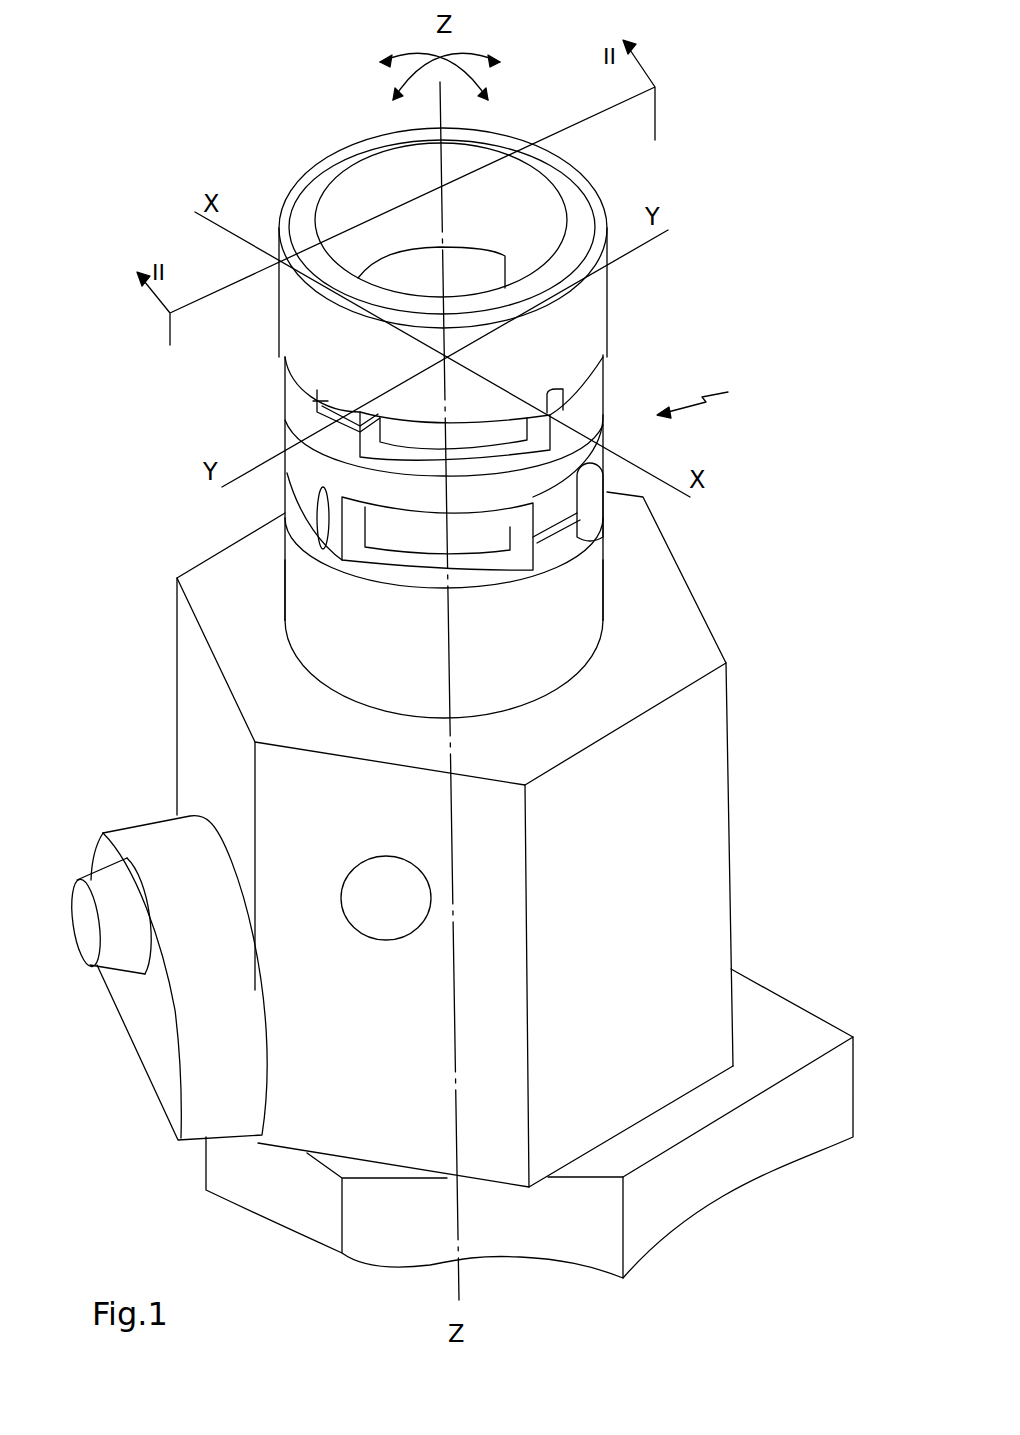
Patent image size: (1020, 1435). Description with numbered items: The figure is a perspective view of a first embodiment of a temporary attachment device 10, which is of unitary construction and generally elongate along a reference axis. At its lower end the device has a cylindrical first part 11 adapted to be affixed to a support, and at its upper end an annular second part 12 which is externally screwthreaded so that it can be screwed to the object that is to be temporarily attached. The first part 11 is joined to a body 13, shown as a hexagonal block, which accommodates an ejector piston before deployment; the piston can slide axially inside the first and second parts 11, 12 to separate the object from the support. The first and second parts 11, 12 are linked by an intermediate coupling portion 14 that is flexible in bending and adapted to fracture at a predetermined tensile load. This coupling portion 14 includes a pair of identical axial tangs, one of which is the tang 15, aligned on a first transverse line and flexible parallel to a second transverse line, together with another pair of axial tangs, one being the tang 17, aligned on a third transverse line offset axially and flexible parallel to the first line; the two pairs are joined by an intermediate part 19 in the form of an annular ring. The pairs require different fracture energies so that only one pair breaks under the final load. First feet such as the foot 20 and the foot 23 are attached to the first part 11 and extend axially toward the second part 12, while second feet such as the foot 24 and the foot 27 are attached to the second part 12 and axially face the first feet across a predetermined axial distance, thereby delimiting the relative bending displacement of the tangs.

The temporary attachment device 10 is at (778, 298).
The cylindrical first part 11 is at (612, 607).
The annular second part 12 is at (612, 292).
The body 13 is at (742, 835).
The intermediate coupling portion 14 is at (710, 395).
The axial tang 15 is at (565, 412).
The axial tang 17 is at (335, 527).
The intermediate part 19 is at (285, 422).
The first foot 20 is at (347, 437).
The first foot 23 is at (588, 522).
The second foot 24 is at (287, 368).
The second foot 27 is at (580, 486).